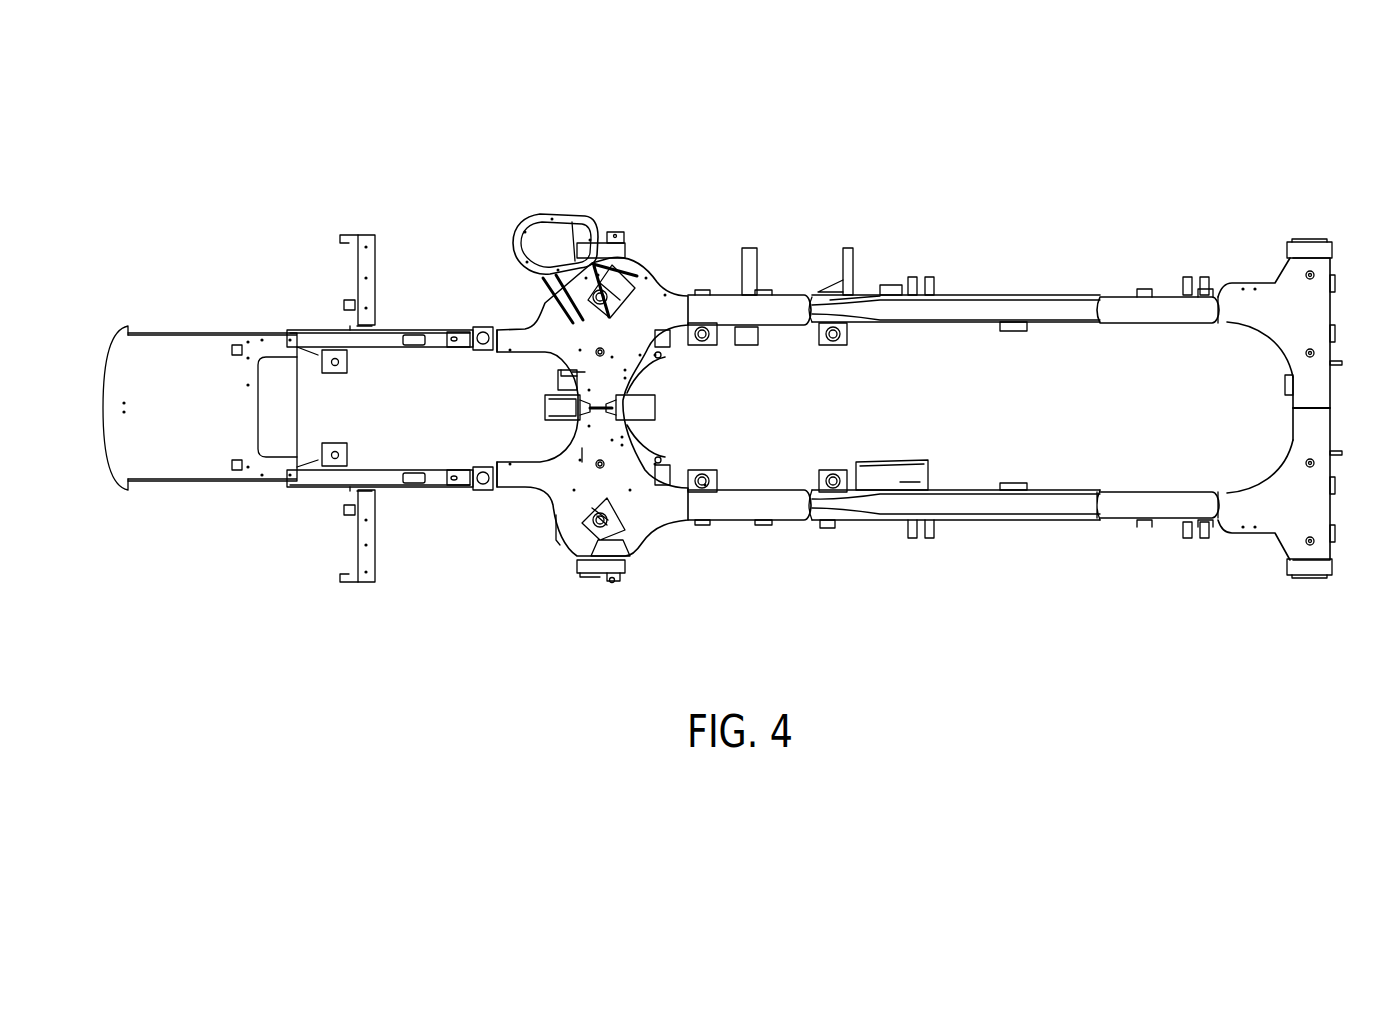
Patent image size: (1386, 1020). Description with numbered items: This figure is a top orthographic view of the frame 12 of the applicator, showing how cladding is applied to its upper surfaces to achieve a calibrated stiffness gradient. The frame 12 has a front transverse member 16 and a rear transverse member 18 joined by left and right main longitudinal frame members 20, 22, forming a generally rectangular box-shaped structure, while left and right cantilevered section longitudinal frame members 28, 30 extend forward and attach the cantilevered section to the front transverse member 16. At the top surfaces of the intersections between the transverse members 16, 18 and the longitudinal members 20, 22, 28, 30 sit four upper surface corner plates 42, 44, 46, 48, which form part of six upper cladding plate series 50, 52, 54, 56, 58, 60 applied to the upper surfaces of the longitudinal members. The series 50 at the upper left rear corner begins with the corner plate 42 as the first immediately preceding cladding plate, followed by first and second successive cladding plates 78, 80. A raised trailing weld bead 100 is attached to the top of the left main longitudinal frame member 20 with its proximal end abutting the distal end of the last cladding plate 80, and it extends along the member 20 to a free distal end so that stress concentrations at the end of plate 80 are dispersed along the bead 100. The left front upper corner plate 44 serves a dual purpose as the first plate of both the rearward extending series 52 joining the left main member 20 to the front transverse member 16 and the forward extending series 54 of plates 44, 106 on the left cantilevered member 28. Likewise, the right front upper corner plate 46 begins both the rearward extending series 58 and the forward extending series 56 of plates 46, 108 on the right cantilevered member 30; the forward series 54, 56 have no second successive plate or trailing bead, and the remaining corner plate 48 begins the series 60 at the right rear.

The frame 12 is at (921, 212).
The front transverse member 16 is at (600, 568).
The rear transverse member 18 is at (1312, 567).
The left main longitudinal frame member 20 is at (967, 510).
The right main longitudinal frame member 22 is at (953, 307).
The left cantilevered section longitudinal frame member 28 is at (313, 477).
The right cantilevered section longitudinal frame member 30 is at (388, 333).
The upper left rear corner plate 42 is at (1295, 513).
The left front upper corner plate 44 is at (558, 500).
The right front upper corner plate 46 is at (648, 295).
The upper right rear corner plate 48 is at (1313, 308).
The upper cladding plate series 50 is at (1037, 625).
The upper cladding plate series 52 is at (885, 625).
The upper cladding plate series 54 is at (450, 625).
The upper cladding plate series 56 is at (440, 200).
The upper cladding plate series 58 is at (606, 200).
The upper cladding plate series 60 is at (987, 200).
The first left rear upper corner successive cladding plate 78 is at (1173, 513).
The second left rear upper corner successive cladding plate 80 is at (1093, 507).
The trailing weld bead 100 is at (1030, 517).
The cladding plate 106 is at (467, 482).
The cladding plate 108 is at (470, 327).